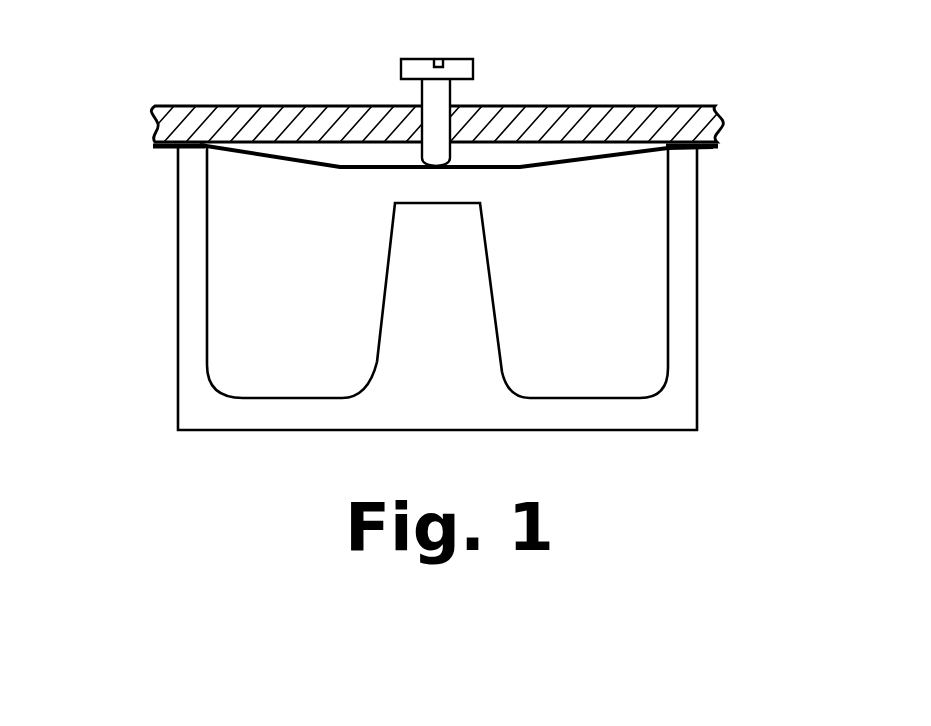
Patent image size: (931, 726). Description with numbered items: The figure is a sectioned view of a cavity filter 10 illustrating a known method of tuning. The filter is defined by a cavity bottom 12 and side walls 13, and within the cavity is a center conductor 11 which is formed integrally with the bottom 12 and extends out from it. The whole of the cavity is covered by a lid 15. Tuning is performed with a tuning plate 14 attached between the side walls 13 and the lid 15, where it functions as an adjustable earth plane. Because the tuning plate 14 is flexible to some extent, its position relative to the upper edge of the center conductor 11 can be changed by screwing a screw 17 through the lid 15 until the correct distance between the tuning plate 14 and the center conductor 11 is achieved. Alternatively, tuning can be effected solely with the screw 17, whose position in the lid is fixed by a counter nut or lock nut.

The cavity filter 10 is at (79, 112).
The center conductor 11 is at (472, 300).
The cavity bottom 12 is at (585, 390).
The side walls 13 is at (207, 260).
The tuning plate 14 is at (590, 165).
The lid 15 is at (681, 108).
The screw 17 is at (458, 66).